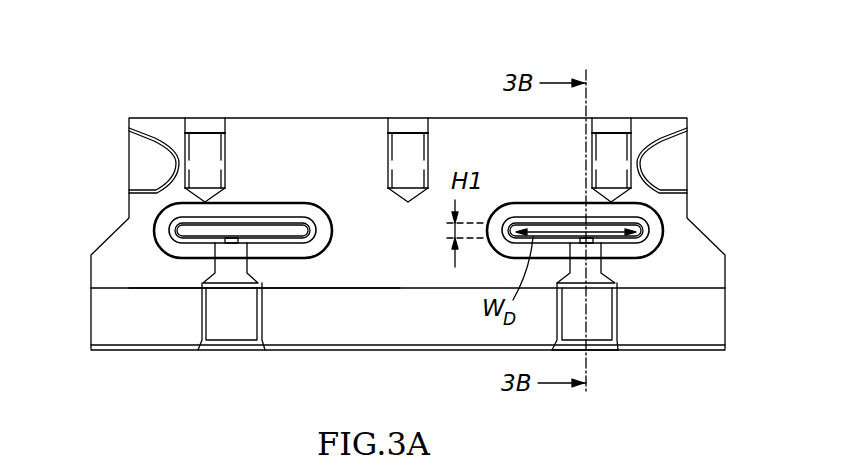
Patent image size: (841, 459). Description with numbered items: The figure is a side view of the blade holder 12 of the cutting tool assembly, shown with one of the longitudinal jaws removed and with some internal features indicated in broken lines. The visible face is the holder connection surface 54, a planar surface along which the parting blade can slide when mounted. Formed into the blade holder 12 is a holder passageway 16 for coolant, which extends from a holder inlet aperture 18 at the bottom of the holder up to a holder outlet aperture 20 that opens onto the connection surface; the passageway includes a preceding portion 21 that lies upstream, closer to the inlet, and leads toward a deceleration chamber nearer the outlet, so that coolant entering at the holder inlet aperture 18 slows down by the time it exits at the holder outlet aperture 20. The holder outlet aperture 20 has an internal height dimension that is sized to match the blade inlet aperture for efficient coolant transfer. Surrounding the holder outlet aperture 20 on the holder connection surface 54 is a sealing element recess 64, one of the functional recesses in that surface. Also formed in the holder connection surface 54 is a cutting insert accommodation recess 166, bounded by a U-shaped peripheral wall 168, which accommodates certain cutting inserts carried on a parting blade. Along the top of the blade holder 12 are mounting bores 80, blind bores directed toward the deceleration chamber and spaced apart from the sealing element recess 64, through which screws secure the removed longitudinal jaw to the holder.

The blade holder 12 is at (714, 79).
The mounting bore 80 is at (608, 142).
The U-shaped peripheral wall 168 is at (678, 136).
The cutting insert accommodation recess 166 is at (680, 177).
The sealing element recess 64 is at (650, 221).
The holder outlet aperture 20 is at (539, 227).
The preceding portion 21 is at (593, 266).
The holder passageway 16 is at (614, 360).
The holder inlet aperture 18 is at (591, 341).
The holder connection surface 54 is at (403, 248).